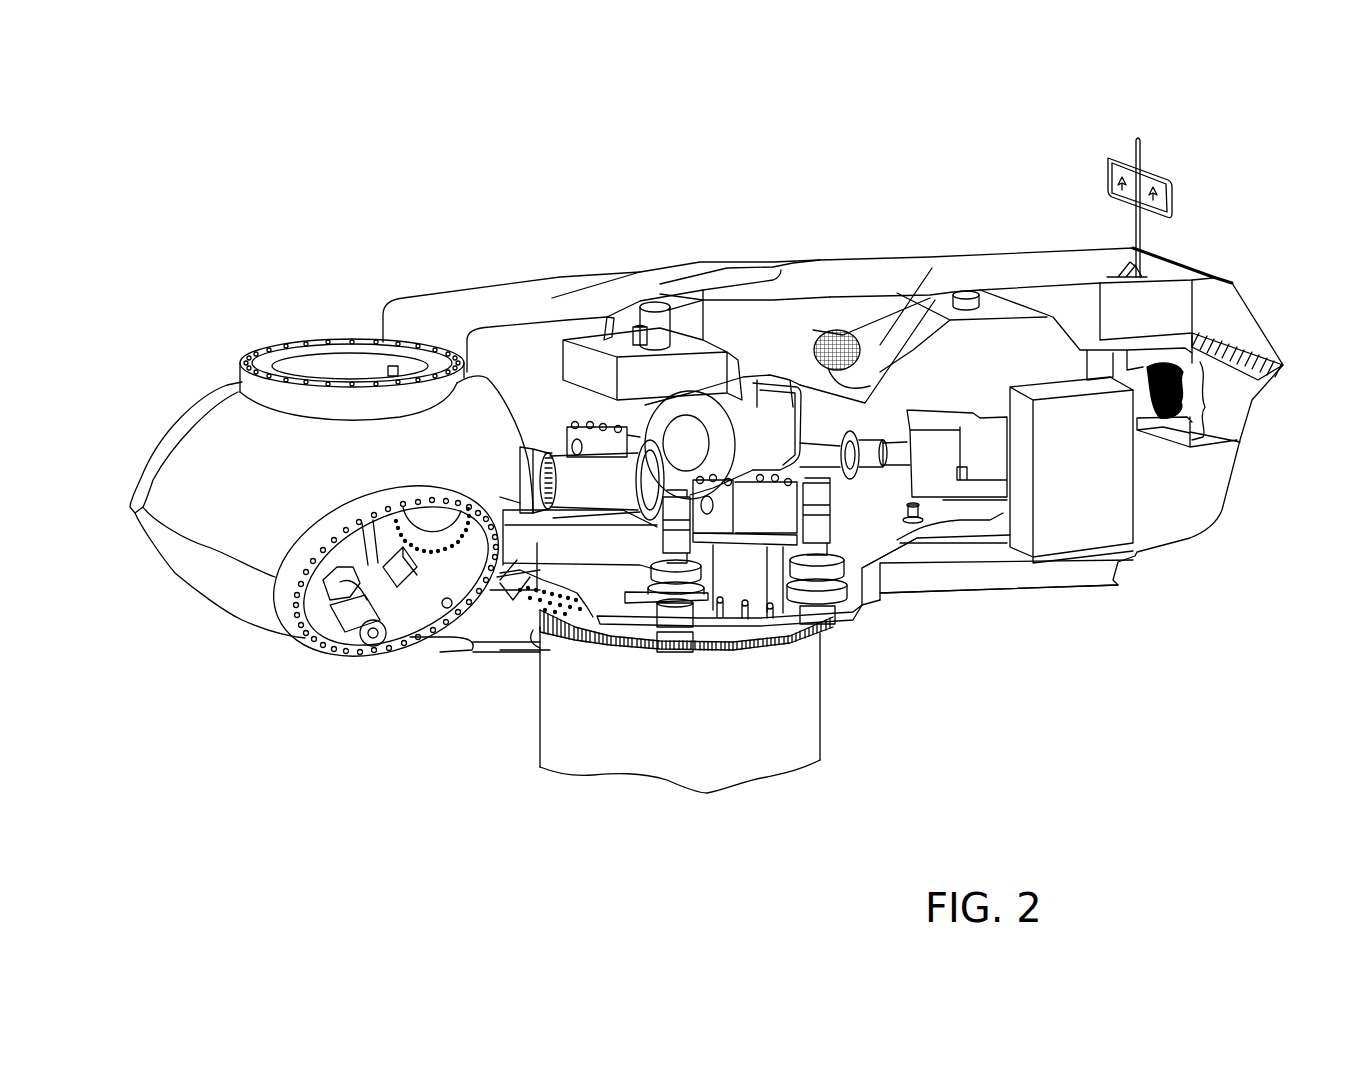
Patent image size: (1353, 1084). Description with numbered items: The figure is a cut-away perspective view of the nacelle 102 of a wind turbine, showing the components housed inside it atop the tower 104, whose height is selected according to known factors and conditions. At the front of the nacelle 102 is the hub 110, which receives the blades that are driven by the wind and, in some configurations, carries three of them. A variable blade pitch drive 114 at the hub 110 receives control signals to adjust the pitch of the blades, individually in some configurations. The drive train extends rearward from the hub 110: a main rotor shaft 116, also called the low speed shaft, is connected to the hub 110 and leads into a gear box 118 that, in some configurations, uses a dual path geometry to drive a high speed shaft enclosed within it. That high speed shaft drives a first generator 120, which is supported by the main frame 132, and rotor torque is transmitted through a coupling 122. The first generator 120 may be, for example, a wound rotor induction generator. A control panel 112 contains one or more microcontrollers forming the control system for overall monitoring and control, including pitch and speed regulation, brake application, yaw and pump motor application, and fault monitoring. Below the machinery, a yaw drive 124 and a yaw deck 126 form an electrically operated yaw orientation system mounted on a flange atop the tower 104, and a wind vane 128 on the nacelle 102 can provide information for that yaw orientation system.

The nacelle 102 is at (465, 307).
The tower 104 is at (752, 763).
The hub 110 is at (268, 390).
The control panel 112 is at (1055, 435).
The variable blade pitch drive 114 is at (320, 607).
The main rotor shaft 116 is at (563, 465).
The gear box 118 is at (748, 428).
The first generator 120 is at (935, 472).
The coupling 122 is at (857, 420).
The yaw drive 124 is at (673, 607).
The yaw deck 126 is at (408, 587).
The wind vane 128 is at (1173, 183).
The main frame 132 is at (1050, 587).